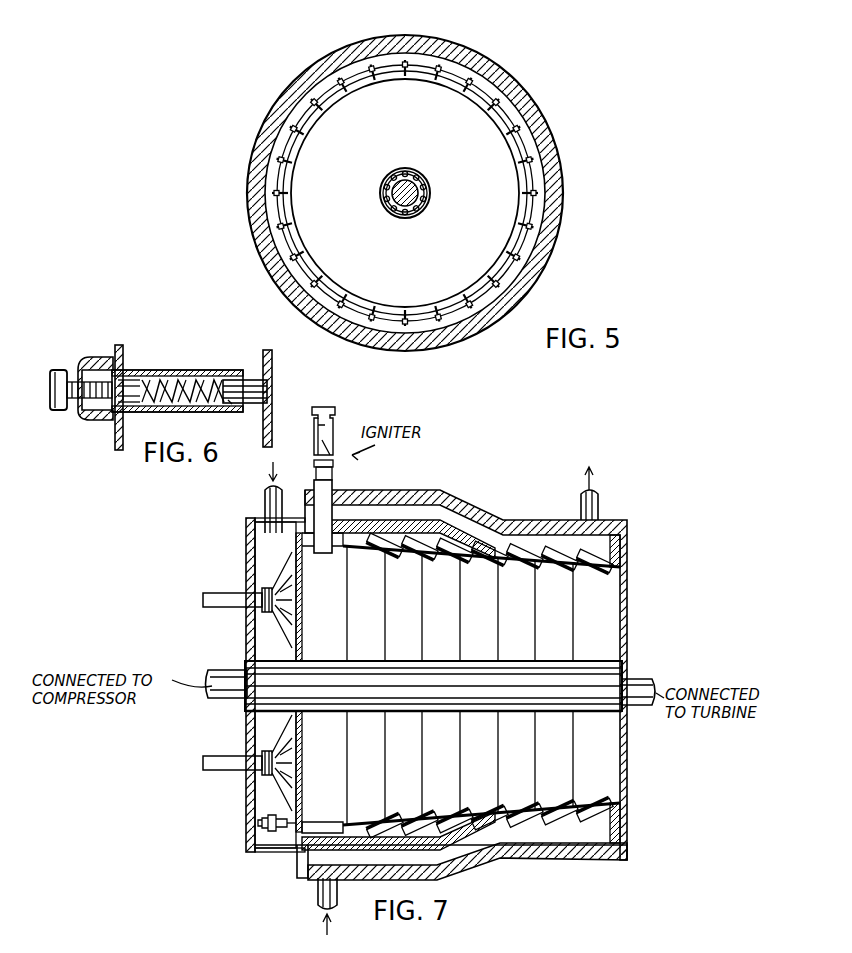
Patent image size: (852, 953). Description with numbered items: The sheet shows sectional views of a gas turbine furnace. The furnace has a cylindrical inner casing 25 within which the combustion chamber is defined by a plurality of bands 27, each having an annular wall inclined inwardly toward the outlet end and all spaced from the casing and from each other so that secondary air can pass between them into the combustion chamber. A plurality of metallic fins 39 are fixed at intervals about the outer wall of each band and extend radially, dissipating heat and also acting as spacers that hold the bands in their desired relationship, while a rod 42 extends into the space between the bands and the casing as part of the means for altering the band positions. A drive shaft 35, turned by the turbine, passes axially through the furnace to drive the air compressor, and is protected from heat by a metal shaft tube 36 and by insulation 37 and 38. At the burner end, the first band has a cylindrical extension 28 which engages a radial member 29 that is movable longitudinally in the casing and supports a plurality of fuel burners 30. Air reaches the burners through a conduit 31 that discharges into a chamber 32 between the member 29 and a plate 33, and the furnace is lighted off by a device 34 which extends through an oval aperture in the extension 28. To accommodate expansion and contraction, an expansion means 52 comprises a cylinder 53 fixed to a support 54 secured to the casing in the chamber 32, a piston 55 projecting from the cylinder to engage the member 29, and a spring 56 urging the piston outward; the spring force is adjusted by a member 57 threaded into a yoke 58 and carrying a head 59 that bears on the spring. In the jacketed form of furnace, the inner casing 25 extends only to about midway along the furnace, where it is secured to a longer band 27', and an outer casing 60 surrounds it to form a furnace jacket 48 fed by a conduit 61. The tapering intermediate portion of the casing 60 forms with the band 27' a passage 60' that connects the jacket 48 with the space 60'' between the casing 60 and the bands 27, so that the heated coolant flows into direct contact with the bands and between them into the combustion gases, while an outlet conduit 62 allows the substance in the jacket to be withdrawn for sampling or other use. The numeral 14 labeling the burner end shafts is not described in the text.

In FIG. 7, the fuel/air inlet shaft 14 is at (230, 595).
In FIG. 5, the casing 25 is at (538, 143).
In FIG. 7, the casing 25 is at (300, 518).
In FIG. 5, the bands 27 is at (405, 166).
In FIG. 7, the bands 27 is at (481, 688).
In FIG. 7, the furnace band 27' is at (522, 585).
In FIG. 7, the cylindrical extension 28 is at (336, 556).
In FIG. 6, the radial member 29 is at (272, 440).
In FIG. 7, the radial member 29 is at (300, 650).
In FIG. 7, the fuel burners 30 is at (285, 578).
In FIG. 7, the conduit 31 is at (267, 505).
In FIG. 7, the chamber 32 is at (265, 640).
In FIG. 7, the plate 33 is at (250, 820).
In FIG. 7, the device 34 is at (336, 412).
In FIG. 5, the shaft 35 is at (400, 168).
In FIG. 7, the shaft 35 is at (630, 680).
In FIG. 5, the metal shaft tube 36 is at (427, 182).
In FIG. 5, the insulation 37 is at (426, 207).
In FIG. 5, the insulation 38 is at (412, 214).
In FIG. 7, the insulation 38 is at (600, 712).
In FIG. 5, the metallic fins 39 is at (497, 105).
In FIG. 7, the metallic fins 39 is at (432, 560).
In FIG. 5, the rod 42 is at (310, 92).
In FIG. 7, the furnace jacket 48 is at (352, 500).
In FIG. 6, the expansion means 52 is at (145, 372).
In FIG. 7, the expansion means 52 is at (258, 823).
In FIG. 6, the cylinder 53 is at (180, 372).
In FIG. 6, the support 54 is at (118, 360).
In FIG. 6, the piston 55 is at (254, 380).
In FIG. 6, the spring 56 is at (212, 408).
In FIG. 6, the member 57 is at (104, 416).
In FIG. 6, the yoke 58 is at (88, 358).
In FIG. 6, the head 59 is at (122, 420).
In FIG. 7, the casing 60 is at (441, 670).
In FIG. 7, the passage 60' is at (464, 487).
In FIG. 7, the space 60'' is at (531, 497).
In FIG. 7, the conduit 61 is at (320, 885).
In FIG. 7, the outlet conduit 62 is at (598, 505).